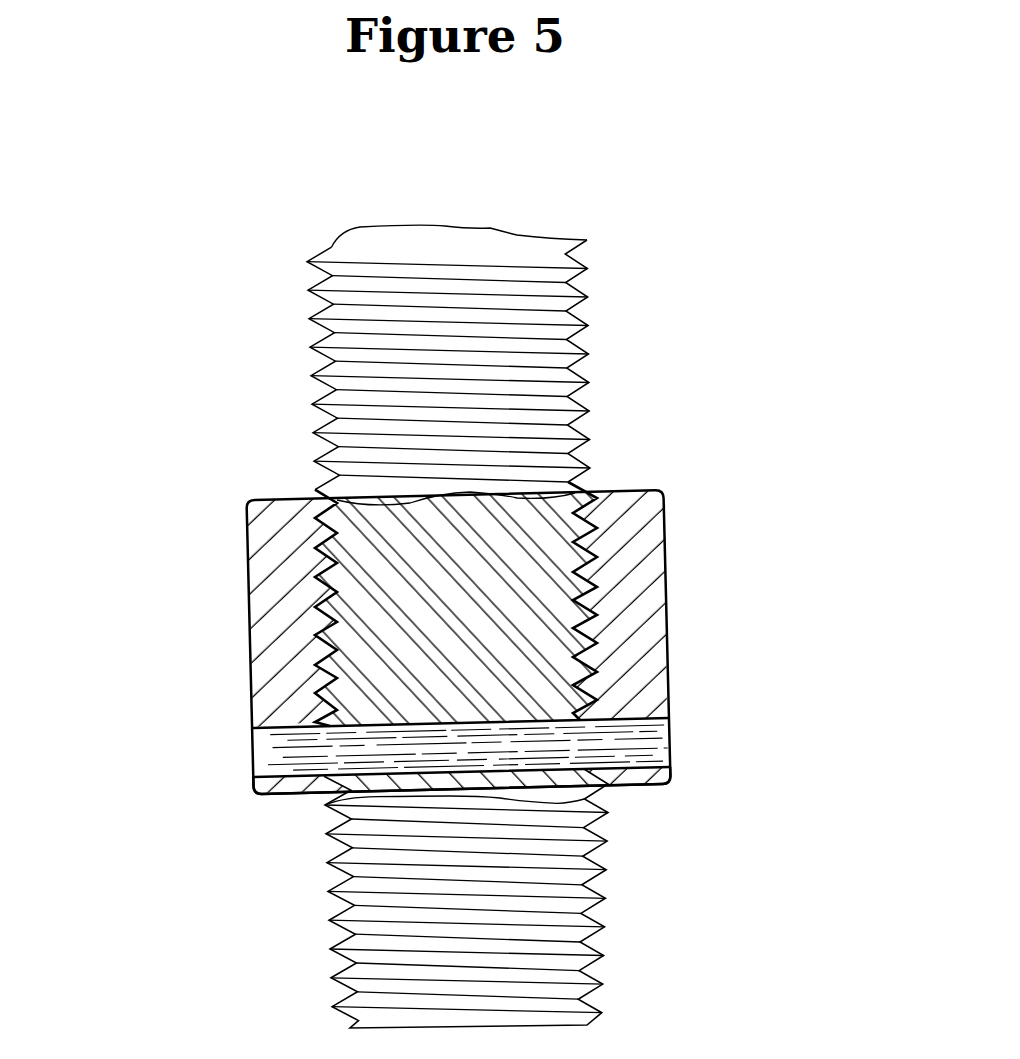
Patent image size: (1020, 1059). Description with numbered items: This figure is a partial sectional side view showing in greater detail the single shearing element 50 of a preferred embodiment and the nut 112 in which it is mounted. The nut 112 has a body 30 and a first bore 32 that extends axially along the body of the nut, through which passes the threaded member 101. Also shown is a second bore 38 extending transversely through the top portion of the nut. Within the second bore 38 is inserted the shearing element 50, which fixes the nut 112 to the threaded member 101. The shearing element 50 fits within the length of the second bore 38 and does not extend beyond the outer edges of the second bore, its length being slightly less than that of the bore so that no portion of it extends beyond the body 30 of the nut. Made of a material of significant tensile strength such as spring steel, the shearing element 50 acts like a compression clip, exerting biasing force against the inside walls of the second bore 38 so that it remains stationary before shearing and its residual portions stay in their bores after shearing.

The threaded member 101 is at (544, 207).
The nut 112 is at (471, 602).
The body 30 is at (244, 631).
The first bore 32 is at (558, 504).
The shearing element 50 is at (682, 734).
The second bore 38 is at (218, 759).